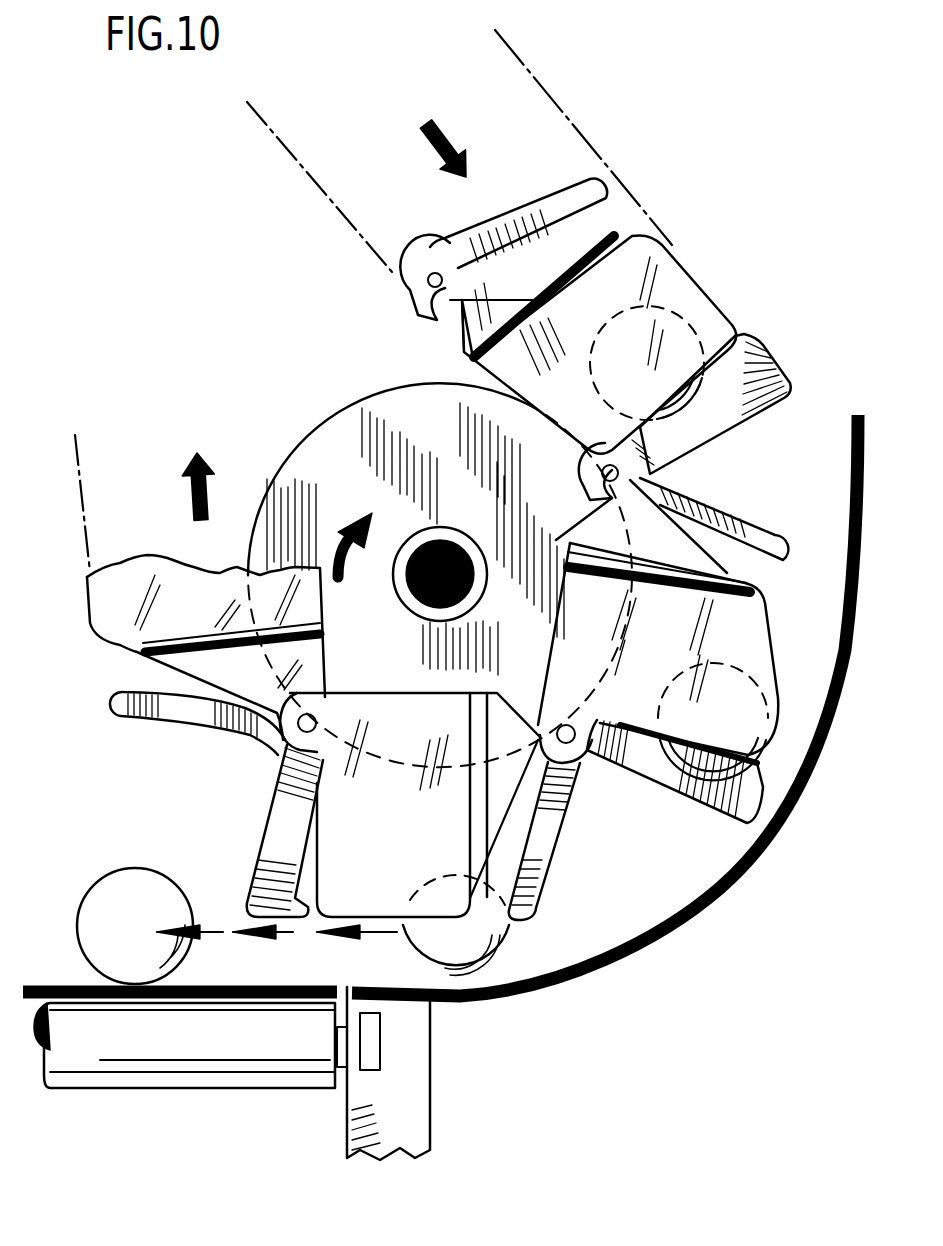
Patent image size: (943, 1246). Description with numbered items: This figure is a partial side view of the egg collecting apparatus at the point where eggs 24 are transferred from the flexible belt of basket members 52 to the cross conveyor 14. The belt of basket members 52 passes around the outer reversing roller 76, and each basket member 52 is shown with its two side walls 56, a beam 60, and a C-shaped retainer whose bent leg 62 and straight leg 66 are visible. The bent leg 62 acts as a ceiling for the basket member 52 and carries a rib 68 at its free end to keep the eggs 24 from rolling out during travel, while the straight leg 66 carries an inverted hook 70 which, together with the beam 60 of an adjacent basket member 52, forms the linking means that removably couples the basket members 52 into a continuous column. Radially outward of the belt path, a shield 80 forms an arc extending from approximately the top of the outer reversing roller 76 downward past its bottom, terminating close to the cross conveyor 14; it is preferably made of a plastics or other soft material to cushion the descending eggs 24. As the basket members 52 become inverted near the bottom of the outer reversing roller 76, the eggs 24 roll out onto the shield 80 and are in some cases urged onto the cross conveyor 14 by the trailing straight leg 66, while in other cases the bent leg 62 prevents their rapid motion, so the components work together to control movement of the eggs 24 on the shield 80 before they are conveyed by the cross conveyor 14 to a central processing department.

The cross conveyor 14 is at (235, 1060).
The eggs 24 is at (90, 903).
The basket member 52 is at (742, 313).
The side wall 56 is at (670, 282).
The beam 60 is at (615, 493).
The bent leg 62 is at (260, 867).
The straight leg 66 is at (595, 183).
The rib 68 is at (703, 813).
The inverted hook 70 is at (417, 300).
The outer reversing roller 76 is at (340, 447).
The shield 80 is at (647, 947).